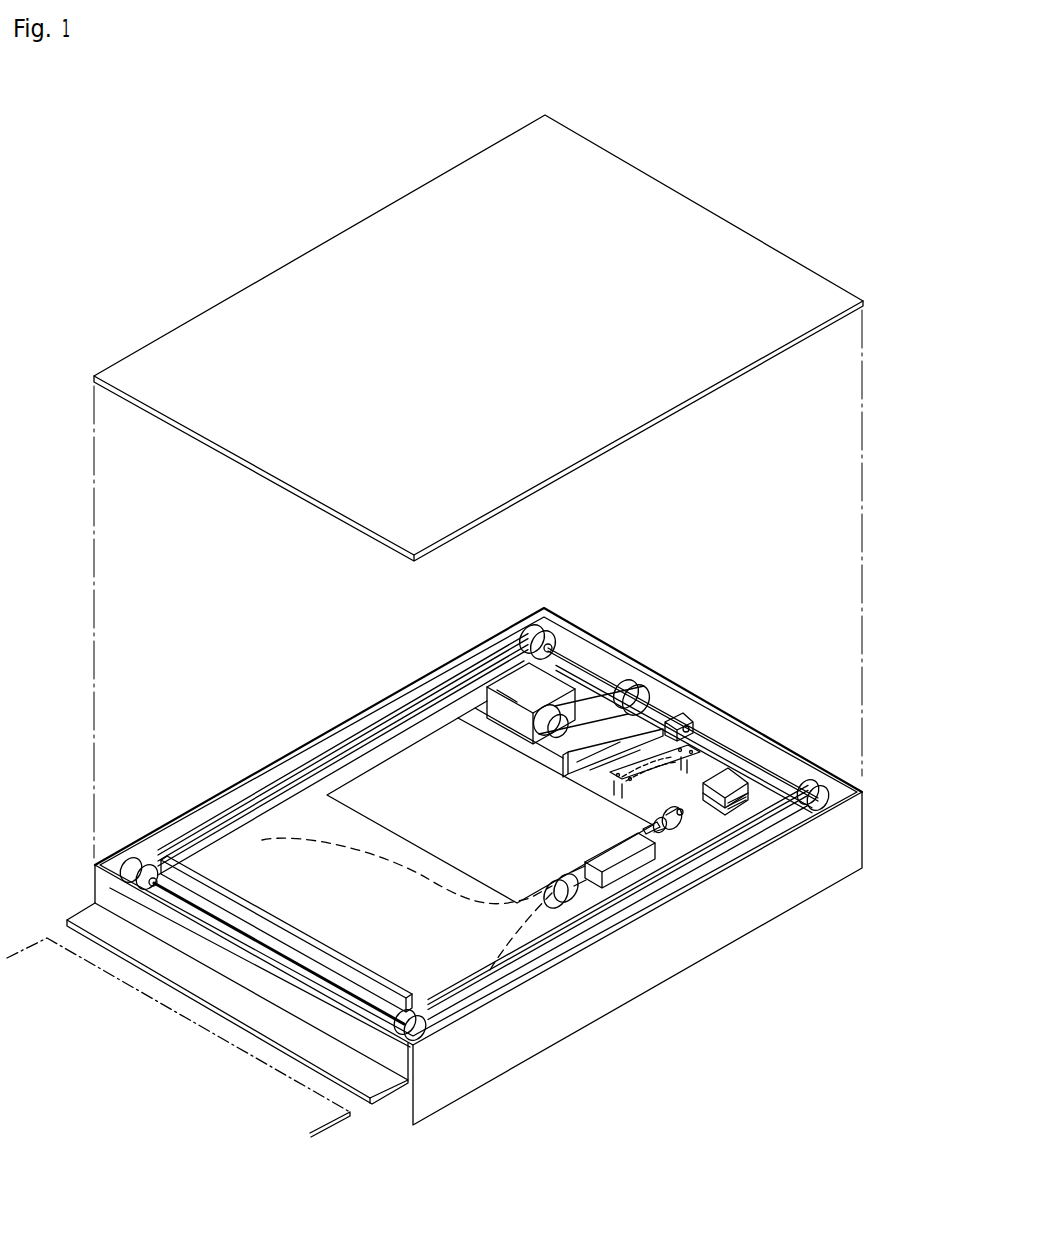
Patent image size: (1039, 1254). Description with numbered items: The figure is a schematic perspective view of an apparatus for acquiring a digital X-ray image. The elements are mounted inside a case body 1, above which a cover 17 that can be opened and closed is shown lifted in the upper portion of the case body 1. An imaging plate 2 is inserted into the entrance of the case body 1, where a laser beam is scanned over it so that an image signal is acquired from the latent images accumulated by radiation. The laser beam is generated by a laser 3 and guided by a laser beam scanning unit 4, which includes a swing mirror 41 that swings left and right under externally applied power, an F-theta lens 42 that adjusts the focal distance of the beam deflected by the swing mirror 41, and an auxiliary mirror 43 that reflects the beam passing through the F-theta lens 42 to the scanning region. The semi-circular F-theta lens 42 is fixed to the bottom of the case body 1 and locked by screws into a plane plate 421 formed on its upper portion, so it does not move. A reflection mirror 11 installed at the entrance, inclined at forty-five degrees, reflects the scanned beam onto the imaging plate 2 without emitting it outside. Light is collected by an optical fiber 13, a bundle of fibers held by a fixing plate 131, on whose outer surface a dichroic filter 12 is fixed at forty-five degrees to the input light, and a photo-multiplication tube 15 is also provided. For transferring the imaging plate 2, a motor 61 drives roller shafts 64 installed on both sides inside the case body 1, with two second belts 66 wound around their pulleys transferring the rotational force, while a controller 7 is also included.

The case body 1 is at (560, 1027).
The imaging plate (IP) 2 is at (333, 1123).
The laser 3 is at (672, 833).
The laser beam scanning unit 4 is at (712, 633).
The controller 7 is at (405, 770).
The reflection mirror 11 is at (108, 893).
The dichroic filter 12 is at (160, 845).
The optical fiber 13 is at (270, 836).
The photo-multiplication tube 15 is at (640, 867).
The cover 17 is at (683, 206).
The swing mirror 41 is at (768, 782).
The F-theta lens 42 is at (732, 771).
The auxiliary mirror 43 is at (645, 720).
The motor 61 is at (520, 675).
The roller shafts 64 is at (580, 663).
The second belts 66 is at (536, 624).
The fixing plate 131 is at (188, 852).
The plane plate 421 is at (692, 713).